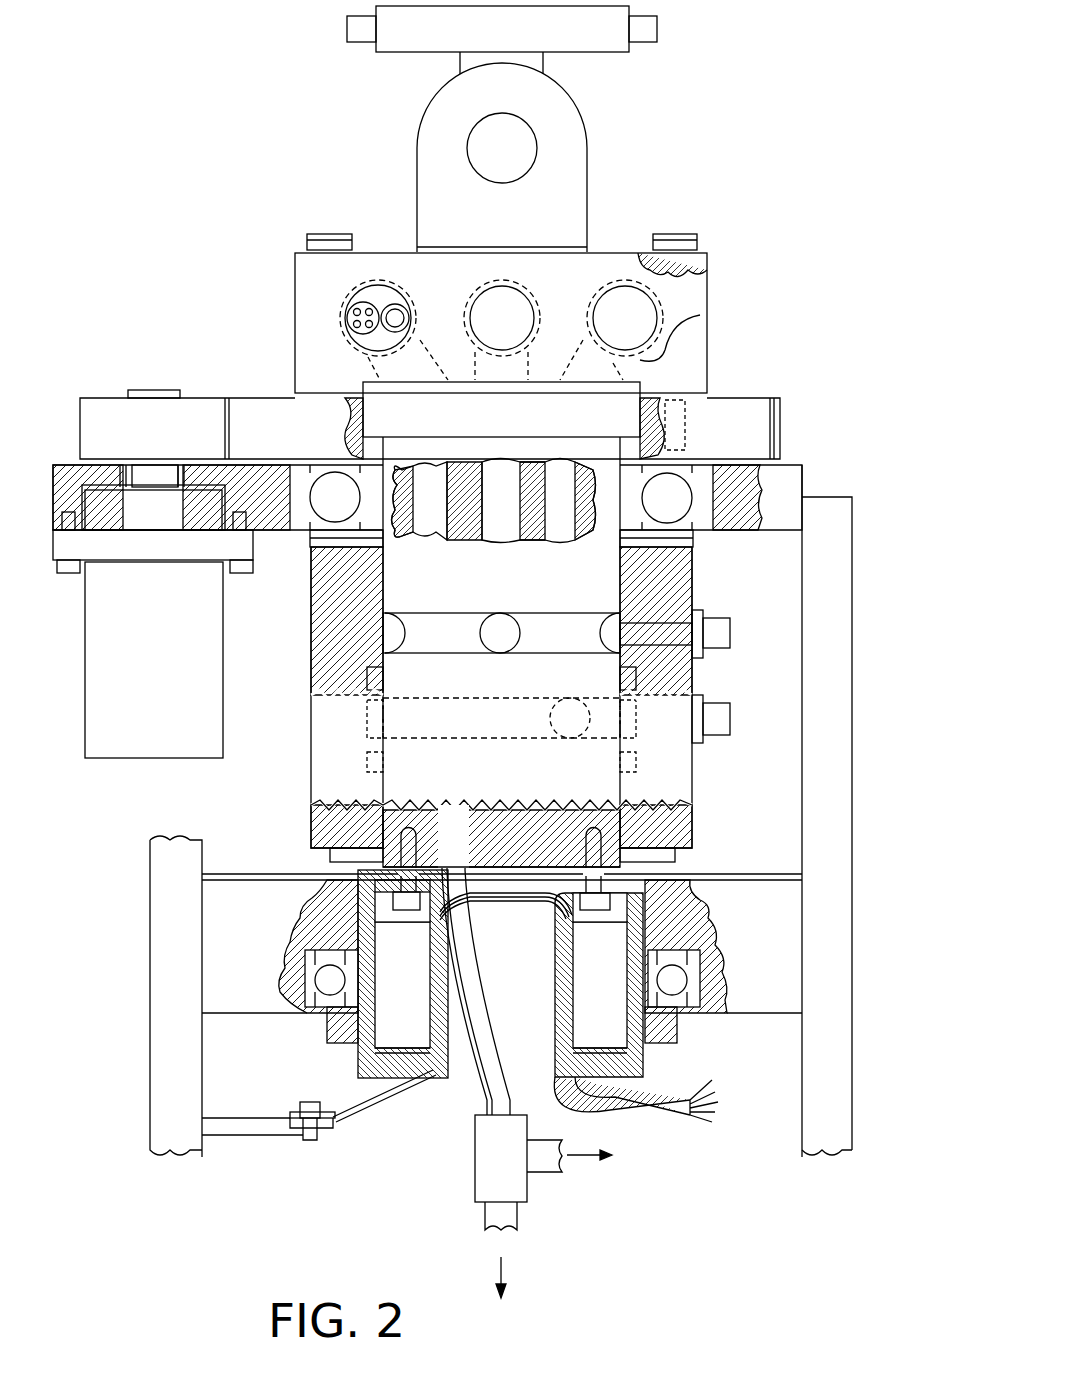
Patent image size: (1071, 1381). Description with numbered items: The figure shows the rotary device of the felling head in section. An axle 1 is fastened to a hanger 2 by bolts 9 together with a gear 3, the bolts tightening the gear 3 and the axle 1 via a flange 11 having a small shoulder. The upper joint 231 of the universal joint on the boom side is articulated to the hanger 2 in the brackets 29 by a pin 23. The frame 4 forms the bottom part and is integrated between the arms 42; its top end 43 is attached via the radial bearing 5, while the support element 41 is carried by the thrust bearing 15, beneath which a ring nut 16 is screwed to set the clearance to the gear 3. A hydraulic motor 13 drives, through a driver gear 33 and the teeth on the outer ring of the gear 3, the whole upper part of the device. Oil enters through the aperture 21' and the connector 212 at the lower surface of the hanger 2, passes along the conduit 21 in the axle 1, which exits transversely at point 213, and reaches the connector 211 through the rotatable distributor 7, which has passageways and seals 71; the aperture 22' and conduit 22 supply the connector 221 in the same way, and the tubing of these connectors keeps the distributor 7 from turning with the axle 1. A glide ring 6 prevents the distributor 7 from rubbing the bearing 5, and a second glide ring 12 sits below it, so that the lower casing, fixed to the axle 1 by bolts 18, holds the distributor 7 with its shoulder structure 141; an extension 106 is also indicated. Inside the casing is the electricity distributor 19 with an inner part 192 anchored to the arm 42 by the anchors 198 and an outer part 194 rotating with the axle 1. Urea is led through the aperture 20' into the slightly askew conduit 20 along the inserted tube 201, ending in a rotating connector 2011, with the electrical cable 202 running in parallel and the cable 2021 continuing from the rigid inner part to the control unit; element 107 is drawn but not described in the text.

The axle 1 is at (390, 433).
The hanger 2 is at (710, 276).
The gear 3 is at (740, 410).
The frame 4 is at (813, 463).
The radial bearing 5 is at (735, 470).
The glide ring 6 is at (685, 548).
The distributor 7 is at (330, 752).
The bolts 9 is at (700, 243).
The flange 11 is at (700, 340).
The glide ring 12 is at (311, 840).
The hydraulic motor 13 is at (205, 688).
The thrust bearing 15 is at (700, 962).
The ring nut 16 is at (668, 1030).
The bolts 18 is at (640, 872).
The electricity distributor 19 is at (440, 1005).
The additional conduit 20 is at (494, 533).
The aperture 20' is at (394, 289).
The hydraulic oil conduit 21 is at (526, 556).
The aperture 21' is at (556, 293).
The hydraulic oil conduit 22 is at (581, 546).
The aperture 22' is at (696, 330).
The pin 23 is at (488, 135).
The brackets 29 is at (570, 178).
The driver gear 33 is at (102, 418).
The support element 41 is at (812, 944).
The arm 42 is at (840, 608).
The top end 43 is at (800, 522).
The seals 71 is at (325, 600).
The extension 106 is at (690, 906).
The cover tab 107 is at (695, 826).
The shoulder structure 141 is at (340, 872).
The inner part 192 is at (567, 985).
The outer part 194 is at (602, 958).
The anchors 198 is at (388, 1095).
The additive fluid tube 201 is at (380, 292).
The electrical cable 202 is at (345, 305).
The connector 211 is at (710, 640).
The connector 212 is at (515, 385).
The exit point 213 is at (510, 630).
The connector 221 is at (713, 725).
The upper joint 231 is at (597, 37).
The rotating connector 2011 is at (522, 1190).
The cable 2021 is at (660, 1115).